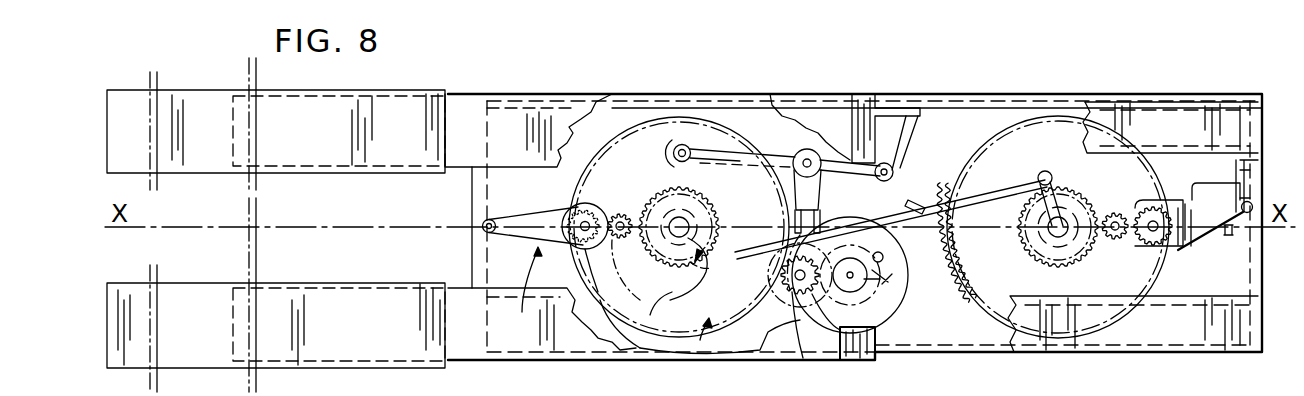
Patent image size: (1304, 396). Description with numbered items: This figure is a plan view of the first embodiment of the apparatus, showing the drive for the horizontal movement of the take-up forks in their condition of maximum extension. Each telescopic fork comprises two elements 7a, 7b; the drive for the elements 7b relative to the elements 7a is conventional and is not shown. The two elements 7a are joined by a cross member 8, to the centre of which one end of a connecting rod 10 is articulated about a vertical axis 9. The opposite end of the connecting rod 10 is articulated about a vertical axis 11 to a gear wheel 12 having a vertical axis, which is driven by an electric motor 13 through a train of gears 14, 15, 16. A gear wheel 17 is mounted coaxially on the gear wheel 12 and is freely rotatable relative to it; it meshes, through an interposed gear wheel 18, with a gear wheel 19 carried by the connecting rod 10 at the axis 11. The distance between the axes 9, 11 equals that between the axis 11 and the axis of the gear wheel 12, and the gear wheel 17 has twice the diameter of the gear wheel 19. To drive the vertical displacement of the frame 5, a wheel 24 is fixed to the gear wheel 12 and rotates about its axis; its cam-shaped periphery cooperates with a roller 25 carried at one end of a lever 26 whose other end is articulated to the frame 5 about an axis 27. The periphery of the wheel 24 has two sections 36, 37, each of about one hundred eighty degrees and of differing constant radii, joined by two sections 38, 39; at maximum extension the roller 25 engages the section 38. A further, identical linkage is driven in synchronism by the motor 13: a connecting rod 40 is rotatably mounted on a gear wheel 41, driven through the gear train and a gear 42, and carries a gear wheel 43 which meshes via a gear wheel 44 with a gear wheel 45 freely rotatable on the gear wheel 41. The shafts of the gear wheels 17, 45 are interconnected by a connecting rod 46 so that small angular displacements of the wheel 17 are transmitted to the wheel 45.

The frame 5 is at (890, 102).
The fork element 7a is at (470, 103).
The fork element 7b is at (196, 107).
The cross member 8 is at (473, 191).
The vertical axis 9 is at (486, 229).
The connecting rod 10 is at (522, 292).
The vertical axis 11 is at (582, 246).
The gear wheel 12 is at (638, 303).
The electric motor 13 is at (896, 275).
The gear 14 is at (905, 306).
The gear 15 is at (818, 300).
The gear 16 is at (798, 295).
The gear wheel 17 is at (700, 220).
The gear wheel 18 is at (618, 246).
The gear wheel 19 is at (556, 210).
The cam wheel 24 is at (706, 338).
The roller 25 is at (684, 144).
The lever 26 is at (783, 158).
The axis 27 is at (890, 172).
The peripheral section 36 is at (647, 200).
The peripheral section 37 is at (766, 348).
The connecting section 38 is at (646, 112).
The connecting section 39 is at (692, 255).
The connecting rod 40 is at (1224, 214).
The gear wheel 41 is at (1060, 140).
The gear 42 is at (912, 214).
The gear wheel 43 is at (1186, 228).
The gear wheel 44 is at (1118, 212).
The gear wheel 45 is at (1080, 246).
The connecting rod 46 is at (992, 186).